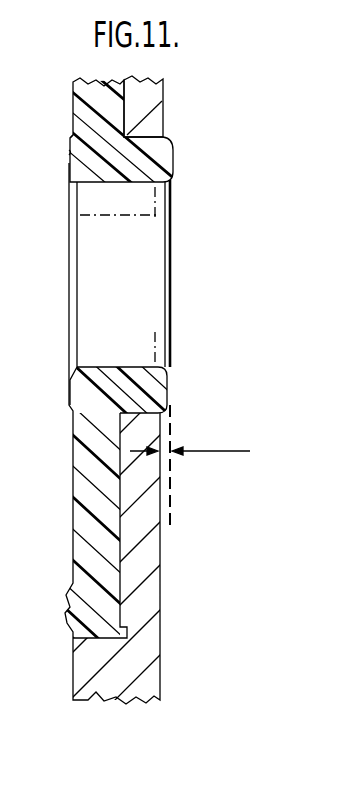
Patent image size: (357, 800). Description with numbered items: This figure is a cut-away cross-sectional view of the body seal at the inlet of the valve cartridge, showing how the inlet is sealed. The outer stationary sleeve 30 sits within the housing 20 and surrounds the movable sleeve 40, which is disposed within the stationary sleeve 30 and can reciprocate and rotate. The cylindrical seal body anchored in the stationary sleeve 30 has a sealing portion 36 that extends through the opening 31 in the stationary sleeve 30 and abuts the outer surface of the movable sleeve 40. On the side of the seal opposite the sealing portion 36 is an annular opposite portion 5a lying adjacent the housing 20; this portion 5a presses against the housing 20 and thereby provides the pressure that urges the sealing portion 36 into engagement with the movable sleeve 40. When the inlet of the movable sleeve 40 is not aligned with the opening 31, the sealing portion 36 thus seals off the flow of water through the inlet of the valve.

The housing 20 is at (69, 268).
The stationary sleeve 30 is at (142, 108).
The opening 31 is at (133, 272).
The sealing portion 36 is at (173, 170).
The movable sleeve 40 is at (170, 293).
The annular opposite portion 5a is at (72, 153).